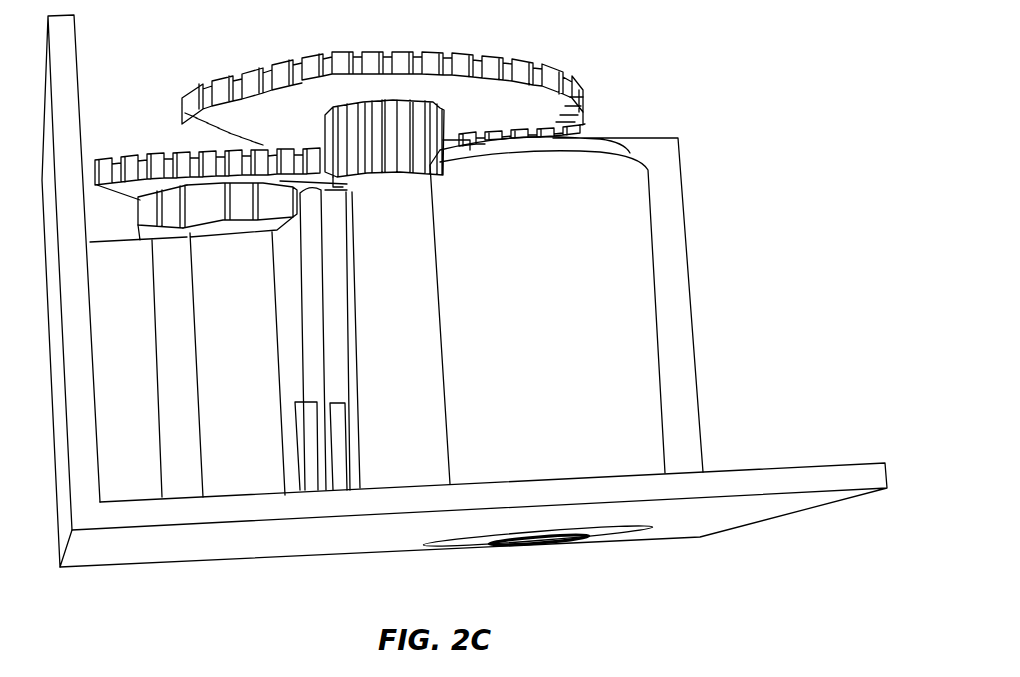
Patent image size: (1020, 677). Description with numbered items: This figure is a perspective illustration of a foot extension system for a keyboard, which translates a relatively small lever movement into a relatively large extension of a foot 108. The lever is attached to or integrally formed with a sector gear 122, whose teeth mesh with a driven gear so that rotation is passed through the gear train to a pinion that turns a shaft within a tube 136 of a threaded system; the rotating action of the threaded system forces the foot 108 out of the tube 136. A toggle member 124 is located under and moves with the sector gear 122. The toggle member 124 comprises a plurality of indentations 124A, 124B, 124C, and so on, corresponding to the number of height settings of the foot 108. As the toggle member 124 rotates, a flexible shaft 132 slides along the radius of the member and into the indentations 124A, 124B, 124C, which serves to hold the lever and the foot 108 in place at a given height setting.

The foot 108 is at (622, 548).
The sector gear 122 is at (160, 146).
The toggle member 124 is at (196, 268).
The indentation 124A is at (173, 217).
The indentation 124B is at (237, 208).
The indentation 124C is at (323, 222).
The flexible shaft 132 is at (336, 323).
The tube 136 is at (653, 274).